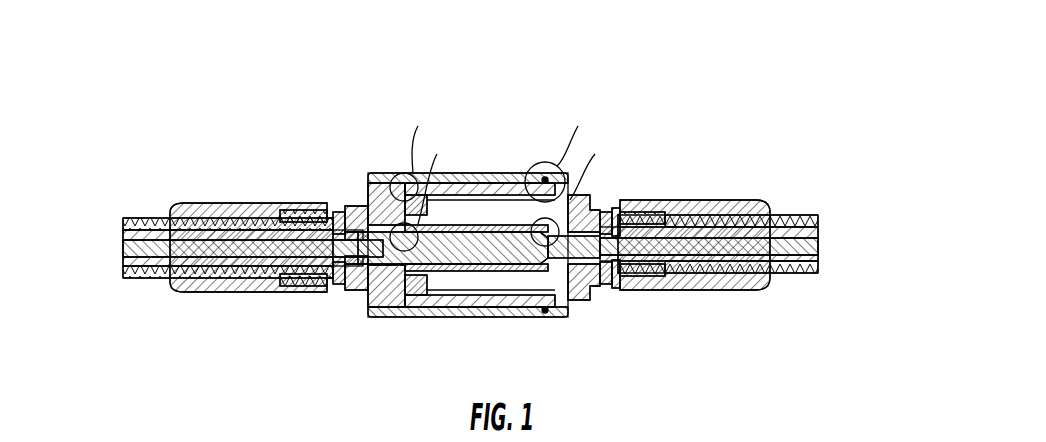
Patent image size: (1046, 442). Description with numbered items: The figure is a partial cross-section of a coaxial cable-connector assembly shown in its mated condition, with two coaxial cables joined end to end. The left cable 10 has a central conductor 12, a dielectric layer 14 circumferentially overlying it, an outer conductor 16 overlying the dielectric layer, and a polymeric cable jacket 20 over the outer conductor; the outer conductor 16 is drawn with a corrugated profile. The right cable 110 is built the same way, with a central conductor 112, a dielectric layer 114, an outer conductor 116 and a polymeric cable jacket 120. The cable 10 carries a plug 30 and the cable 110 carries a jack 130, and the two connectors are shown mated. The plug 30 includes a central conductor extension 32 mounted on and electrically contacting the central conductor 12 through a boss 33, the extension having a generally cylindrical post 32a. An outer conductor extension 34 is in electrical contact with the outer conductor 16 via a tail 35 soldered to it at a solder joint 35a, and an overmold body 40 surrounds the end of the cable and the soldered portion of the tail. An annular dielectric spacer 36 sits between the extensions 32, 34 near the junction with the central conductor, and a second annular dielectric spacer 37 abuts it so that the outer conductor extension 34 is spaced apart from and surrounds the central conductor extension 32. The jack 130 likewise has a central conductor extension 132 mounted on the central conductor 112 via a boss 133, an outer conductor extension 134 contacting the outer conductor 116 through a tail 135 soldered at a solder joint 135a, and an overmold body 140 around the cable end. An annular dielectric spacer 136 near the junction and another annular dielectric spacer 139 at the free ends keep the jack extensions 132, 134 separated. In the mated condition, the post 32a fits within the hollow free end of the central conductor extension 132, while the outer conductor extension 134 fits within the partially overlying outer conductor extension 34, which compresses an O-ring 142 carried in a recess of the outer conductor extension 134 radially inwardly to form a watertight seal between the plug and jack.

The coaxial cable 10 is at (163, 160).
The central conductor 12 is at (124, 248).
The dielectric layer 14 is at (124, 228).
The outer conductor 16 is at (130, 279).
The polymeric cable jacket 20 is at (145, 218).
The plug 30 is at (256, 128).
The central conductor extension 32 is at (360, 303).
The post 32a is at (445, 318).
The boss 33 is at (340, 212).
The outer conductor extension 34 is at (398, 173).
The tail 35 is at (330, 206).
The solder joint 35a is at (300, 216).
The annular dielectric spacer 36 is at (352, 300).
The annular dielectric spacer 37 is at (380, 184).
The overmold body 40 is at (226, 203).
The coaxial cable 110 is at (806, 163).
The central conductor 112 is at (820, 247).
The dielectric layer 114 is at (820, 226).
The outer conductor 116 is at (818, 275).
The polymeric cable jacket 120 is at (812, 213).
The jack 130 is at (697, 130).
The central conductor extension 132 is at (556, 305).
The boss 133 is at (586, 300).
The outer conductor extension 134 is at (468, 306).
The tail 135 is at (610, 286).
The solder joint 135a is at (655, 278).
The annular dielectric spacer 136 is at (605, 200).
The annular dielectric spacer 139 is at (405, 318).
The overmold body 140 is at (745, 201).
The O-ring 142 is at (545, 312).